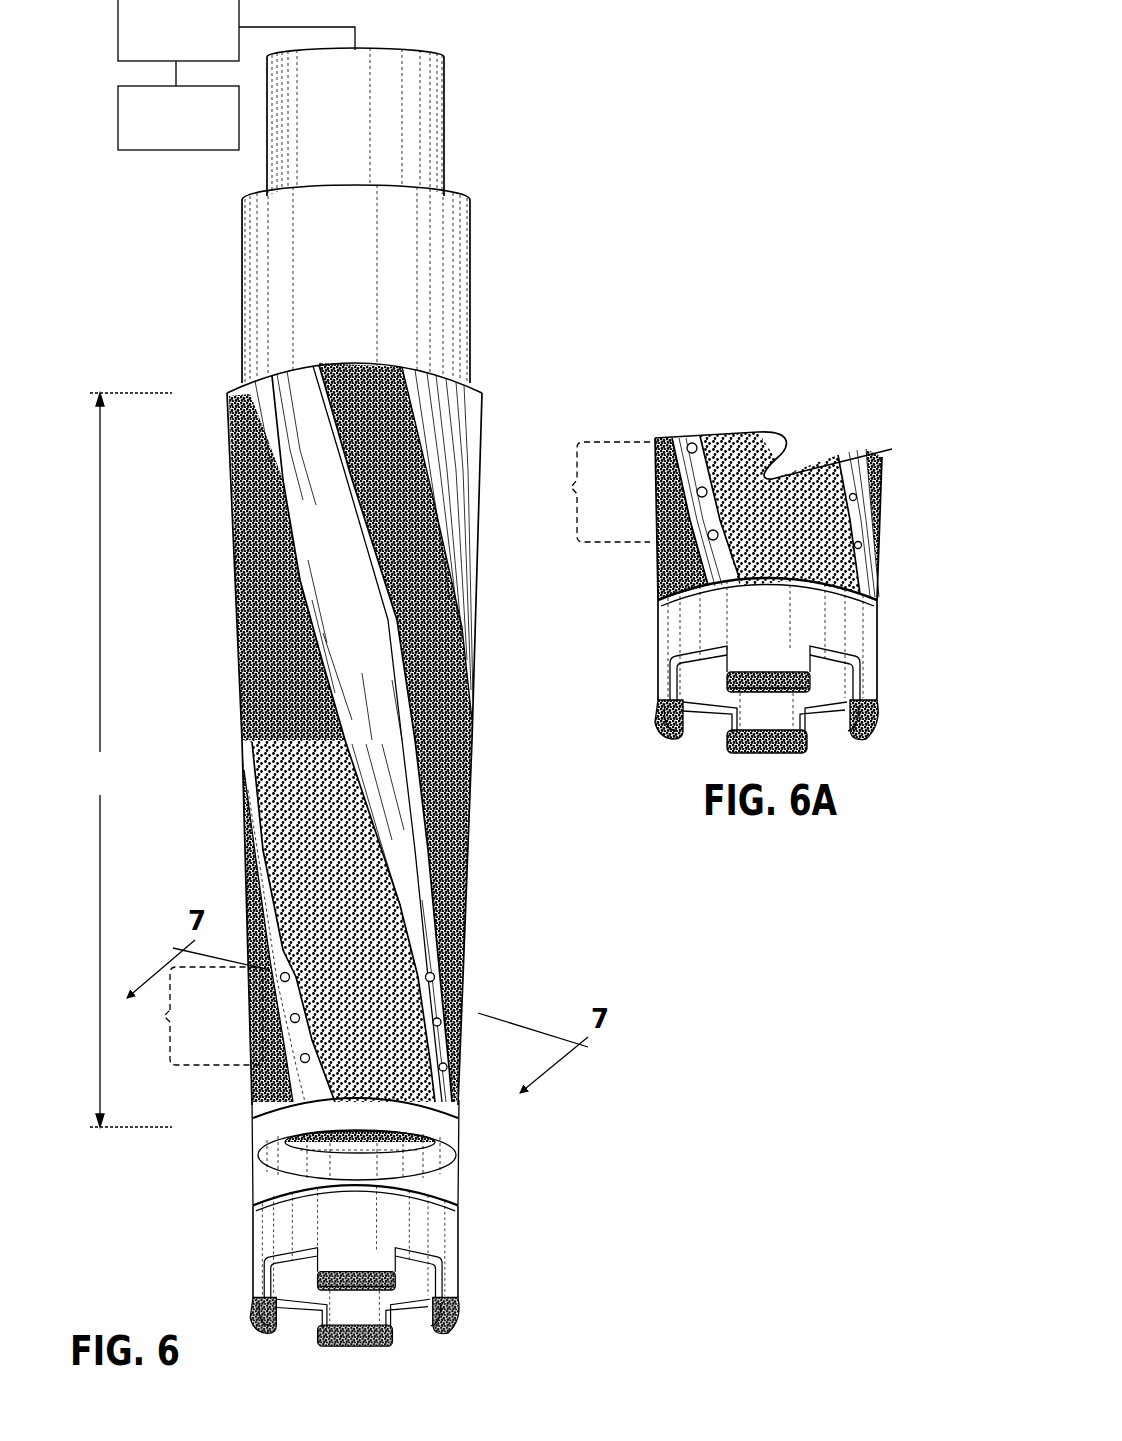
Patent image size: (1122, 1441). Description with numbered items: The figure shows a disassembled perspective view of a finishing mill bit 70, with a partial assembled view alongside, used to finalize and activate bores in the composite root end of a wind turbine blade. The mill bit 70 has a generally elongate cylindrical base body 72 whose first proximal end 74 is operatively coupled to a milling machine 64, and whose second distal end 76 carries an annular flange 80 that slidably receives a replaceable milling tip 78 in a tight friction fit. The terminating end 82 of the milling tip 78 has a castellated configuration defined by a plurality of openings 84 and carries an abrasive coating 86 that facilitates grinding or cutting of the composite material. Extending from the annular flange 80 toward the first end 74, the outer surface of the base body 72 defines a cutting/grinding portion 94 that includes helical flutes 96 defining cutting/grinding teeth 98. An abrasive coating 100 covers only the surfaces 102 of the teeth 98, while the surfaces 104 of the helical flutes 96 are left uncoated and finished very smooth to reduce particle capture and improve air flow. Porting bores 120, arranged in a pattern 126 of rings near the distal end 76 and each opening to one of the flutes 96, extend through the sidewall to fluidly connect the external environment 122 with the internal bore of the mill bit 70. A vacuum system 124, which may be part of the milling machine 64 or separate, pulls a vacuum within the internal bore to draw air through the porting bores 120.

In FIG. 6, the milling machine 64 is at (118, 30).
In FIG. 6, the vacuum system 124 is at (118, 106).
In FIG. 6, the first proximal end 74 is at (444, 87).
In FIG. 6, the cylindrical base body 72 is at (242, 246).
In FIG. 6, the finishing mill bit 70 is at (210, 372).
In FIG. 6A, the finishing mill bit 70 is at (875, 425).
In FIG. 6, the external environment 122 is at (307, 749).
In FIG. 6, the cutting/grinding portion 94 is at (128, 760).
In FIG. 6, the helical flutes 96 is at (255, 425).
In FIG. 6A, the helical flutes 96 is at (688, 477).
In FIG. 6, the cutting/grinding teeth 98 is at (435, 608).
In FIG. 6A, the cutting/grinding teeth 98 is at (752, 470).
In FIG. 6, the abrasive coating 100 is at (292, 732).
In FIG. 6A, the abrasive coating 100 is at (732, 440).
In FIG. 6, the surfaces of the teeth 102 is at (366, 440).
In FIG. 6A, the surfaces of the teeth 102 is at (753, 525).
In FIG. 6, the surfaces of the helical flutes 104 is at (288, 525).
In FIG. 6, the porting bores 120 is at (300, 1055).
In FIG. 6A, the porting bores 120 is at (709, 534).
In FIG. 6, the pattern of porting bores 126 is at (191, 1016).
In FIG. 6A, the pattern of porting bores 126 is at (588, 492).
In FIG. 6, the second distal end 76 is at (255, 1140).
In FIG. 6, the annular flange 80 is at (437, 1133).
In FIG. 6, the milling tip 78 is at (250, 1228).
In FIG. 6A, the milling tip 78 is at (655, 635).
In FIG. 6, the terminating end 82 is at (258, 1278).
In FIG. 6A, the terminating end 82 is at (660, 683).
In FIG. 6, the openings 84 is at (445, 1285).
In FIG. 6A, the openings 84 is at (858, 690).
In FIG. 6, the abrasive coating 86 is at (375, 1343).
In FIG. 6A, the abrasive coating 86 is at (790, 753).